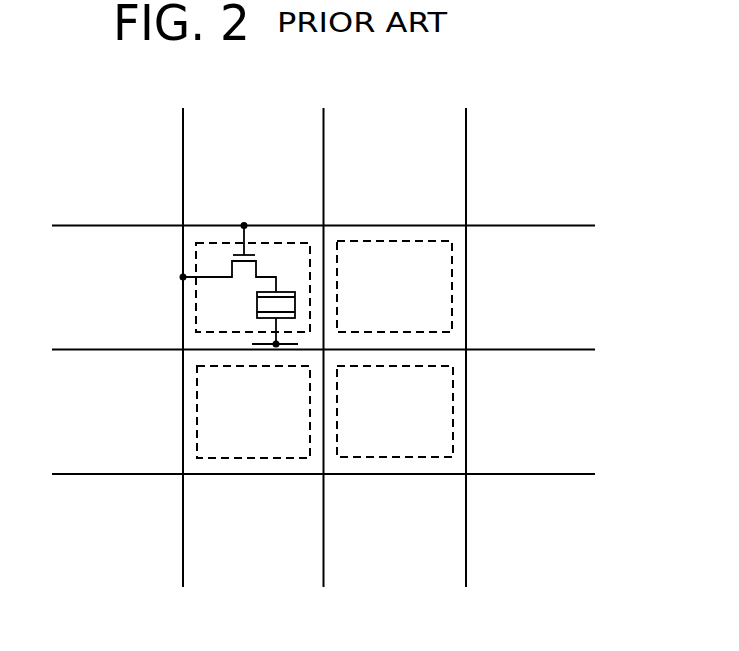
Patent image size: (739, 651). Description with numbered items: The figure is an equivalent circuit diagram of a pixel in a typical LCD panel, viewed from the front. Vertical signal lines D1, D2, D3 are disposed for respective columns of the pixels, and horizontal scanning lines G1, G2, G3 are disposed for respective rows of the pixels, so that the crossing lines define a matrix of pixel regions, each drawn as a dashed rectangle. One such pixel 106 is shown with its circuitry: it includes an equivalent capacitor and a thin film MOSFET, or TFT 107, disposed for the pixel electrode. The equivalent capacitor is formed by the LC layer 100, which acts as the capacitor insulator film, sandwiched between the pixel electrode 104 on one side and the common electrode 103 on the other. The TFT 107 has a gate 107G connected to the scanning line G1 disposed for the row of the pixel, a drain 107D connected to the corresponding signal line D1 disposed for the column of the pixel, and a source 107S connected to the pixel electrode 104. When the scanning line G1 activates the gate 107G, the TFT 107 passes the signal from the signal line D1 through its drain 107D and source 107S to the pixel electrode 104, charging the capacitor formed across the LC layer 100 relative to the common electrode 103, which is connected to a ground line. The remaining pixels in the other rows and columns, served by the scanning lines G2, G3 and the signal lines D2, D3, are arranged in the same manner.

The signal line D1 is at (183, 128).
The data line D2 is at (325, 125).
The data line D3 is at (467, 125).
The scanning line G1 is at (108, 225).
The scanning line G2 is at (112, 350).
The scanning line G3 is at (112, 475).
The pixel 106 is at (310, 257).
The thin film MOSFET (TFT) 107 is at (258, 262).
The gate of TFT 107G is at (243, 250).
The source of TFT 107S is at (262, 273).
The drain of TFT 107D is at (217, 278).
The LC layer 100 is at (296, 305).
The pixel electrode 104 is at (296, 292).
The common electrode 103 is at (296, 316).